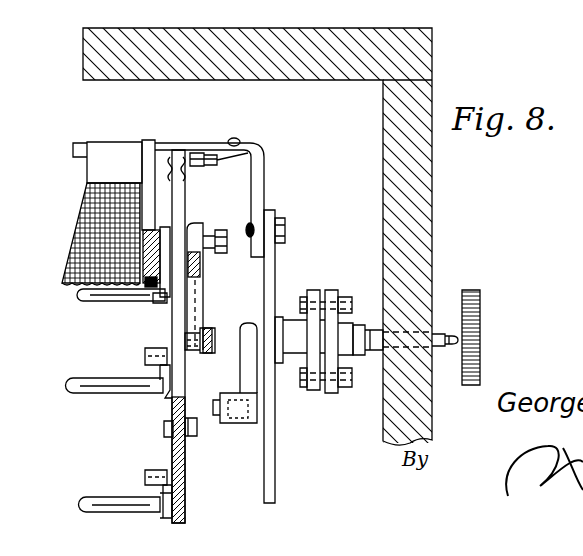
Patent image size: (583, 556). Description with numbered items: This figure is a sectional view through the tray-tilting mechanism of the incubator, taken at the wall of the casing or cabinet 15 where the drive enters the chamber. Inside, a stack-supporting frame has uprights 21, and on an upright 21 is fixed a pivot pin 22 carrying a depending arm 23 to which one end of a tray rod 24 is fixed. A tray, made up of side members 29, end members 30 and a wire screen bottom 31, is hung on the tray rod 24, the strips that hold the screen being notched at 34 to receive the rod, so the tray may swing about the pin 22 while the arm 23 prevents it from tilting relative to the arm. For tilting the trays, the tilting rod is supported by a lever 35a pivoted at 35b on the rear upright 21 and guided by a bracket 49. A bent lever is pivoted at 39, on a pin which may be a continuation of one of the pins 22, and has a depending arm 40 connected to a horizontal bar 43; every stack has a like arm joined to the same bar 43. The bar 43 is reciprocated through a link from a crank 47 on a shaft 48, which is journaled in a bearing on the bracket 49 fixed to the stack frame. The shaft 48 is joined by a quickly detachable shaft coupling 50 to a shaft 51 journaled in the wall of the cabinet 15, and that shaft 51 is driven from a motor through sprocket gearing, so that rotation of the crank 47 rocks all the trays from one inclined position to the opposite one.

The casing or cabinet 15 is at (432, 33).
The upright 21 is at (178, 213).
The pivot pin 22 is at (86, 222).
The depending arm 23 is at (164, 396).
The tray rod 24 is at (81, 302).
The side member 29 is at (97, 138).
The end member 30 is at (165, 135).
The wire screen bottom 31 is at (62, 281).
The notch 34 is at (152, 286).
The lever 35a is at (189, 434).
The pivot of lever 35b is at (166, 428).
The pivot of bent lever 39 is at (226, 236).
The depending arm of bent lever 40 is at (200, 309).
The horizontal bar 43 is at (201, 355).
The crank 47 is at (252, 421).
The shaft 48 is at (293, 328).
The bracket 49 is at (276, 480).
The shaft coupling 50 is at (347, 303).
The shaft 51 is at (366, 356).